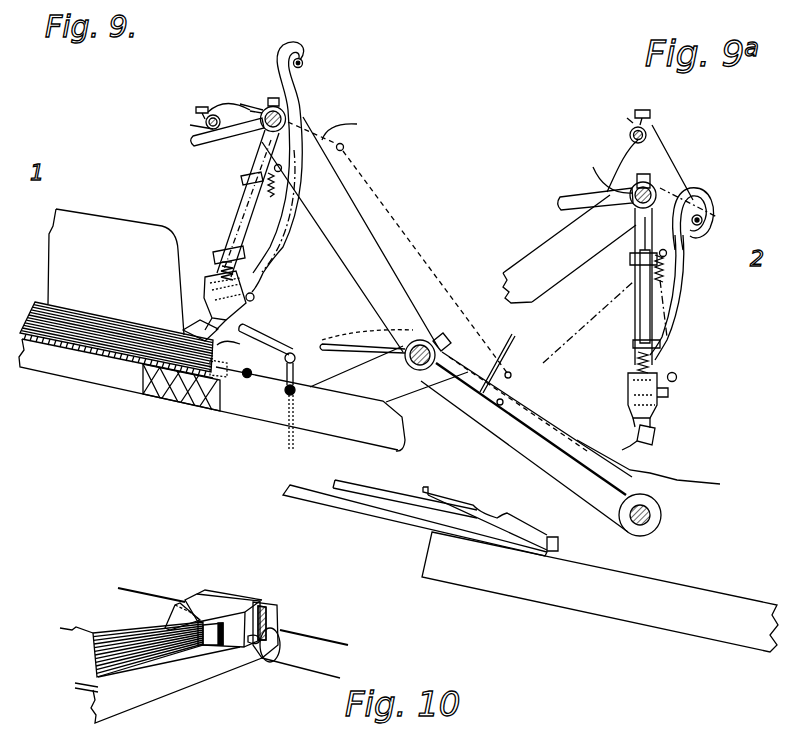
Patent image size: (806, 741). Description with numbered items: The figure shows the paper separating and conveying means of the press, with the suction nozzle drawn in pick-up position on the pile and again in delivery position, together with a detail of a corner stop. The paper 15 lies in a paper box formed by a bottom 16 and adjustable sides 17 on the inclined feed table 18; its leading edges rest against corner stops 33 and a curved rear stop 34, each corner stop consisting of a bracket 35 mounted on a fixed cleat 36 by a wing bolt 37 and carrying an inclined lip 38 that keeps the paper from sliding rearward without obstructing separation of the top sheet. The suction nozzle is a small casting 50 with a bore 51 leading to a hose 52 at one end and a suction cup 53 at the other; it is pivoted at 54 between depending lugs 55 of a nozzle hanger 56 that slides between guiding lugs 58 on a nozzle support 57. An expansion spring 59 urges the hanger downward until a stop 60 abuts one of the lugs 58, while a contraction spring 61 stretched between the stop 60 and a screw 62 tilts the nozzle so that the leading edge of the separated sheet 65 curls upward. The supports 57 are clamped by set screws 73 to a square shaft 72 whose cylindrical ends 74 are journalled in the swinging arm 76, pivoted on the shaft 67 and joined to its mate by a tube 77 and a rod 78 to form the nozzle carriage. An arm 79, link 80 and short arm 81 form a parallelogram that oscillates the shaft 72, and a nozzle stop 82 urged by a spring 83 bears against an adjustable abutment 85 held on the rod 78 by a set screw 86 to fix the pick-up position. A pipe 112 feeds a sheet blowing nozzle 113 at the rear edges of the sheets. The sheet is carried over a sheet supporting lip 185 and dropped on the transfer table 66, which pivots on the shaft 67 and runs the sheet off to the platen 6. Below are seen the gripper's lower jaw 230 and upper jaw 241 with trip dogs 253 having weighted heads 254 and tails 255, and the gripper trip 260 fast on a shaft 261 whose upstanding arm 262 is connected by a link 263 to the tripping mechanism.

In FIG. 9, the table 6 is at (600, 592).
In FIG. 9, the paper 15 is at (107, 323).
In FIG. 10, the paper 15 is at (142, 639).
In FIG. 9, the bottom 16 is at (72, 350).
In FIG. 10, the bottom 16 is at (75, 685).
In FIG. 9, the adjustable sides 17 is at (116, 272).
In FIG. 9, the inclined feed table 18 is at (208, 394).
In FIG. 10, the inclined feed table 18 is at (80, 722).
In FIG. 10, the corner stops 33 is at (222, 610).
In FIG. 9, the curved rear stop 34 is at (173, 392).
In FIG. 10, the bracket 35 is at (203, 593).
In FIG. 10, the fixed cleat 36 is at (277, 607).
In FIG. 10, the wing bolt 37 is at (280, 652).
In FIG. 10, the inclined lip 38 is at (170, 618).
In FIG. 9, the small casting 50 is at (216, 298).
In FIG. 9A, the small casting 50 is at (628, 393).
In FIG. 9, the bore 51 is at (250, 308).
In FIG. 9A, the bore 51 is at (636, 403).
In FIG. 9, the hose 52 is at (277, 252).
In FIG. 9A, the hose 52 is at (683, 300).
In FIG. 9, the suction cup 53 is at (173, 328).
In FIG. 9A, the suction cup 53 is at (640, 440).
In FIG. 9, the pivot 54 is at (206, 324).
In FIG. 9A, the pivot 54 is at (655, 418).
In FIG. 9, the depending lugs 55 is at (222, 262).
In FIG. 9A, the depending lugs 55 is at (660, 400).
In FIG. 9, the nozzle hanger 56 is at (247, 213).
In FIG. 9A, the nozzle hanger 56 is at (645, 318).
In FIG. 9, the nozzle support 57 is at (262, 145).
In FIG. 9A, the nozzle support 57 is at (647, 223).
In FIG. 9, the guiding lugs 58 is at (243, 186).
In FIG. 9A, the guiding lugs 58 is at (660, 345).
In FIG. 9, the expansion spring 59 is at (257, 282).
In FIG. 9A, the expansion spring 59 is at (637, 363).
In FIG. 9, the stop 60 is at (282, 165).
In FIG. 9A, the stop 60 is at (667, 253).
In FIG. 9, the contraction spring 61 is at (293, 210).
In FIG. 9A, the contraction spring 61 is at (665, 273).
In FIG. 9, the screw 62 is at (255, 297).
In FIG. 9A, the screw 62 is at (677, 376).
In FIG. 9A, the separated sheet 65 is at (722, 484).
In FIG. 9, the transfer table 66 is at (543, 447).
In FIG. 9, the shaft 67 is at (422, 371).
In FIG. 9, the shaft 72 is at (285, 112).
In FIG. 9A, the shaft 72 is at (657, 188).
In FIG. 9, the set screws 73 is at (280, 98).
In FIG. 9A, the set screws 73 is at (650, 170).
In FIG. 9, the cylindrical ends 74 is at (260, 123).
In FIG. 9A, the cylindrical ends 74 is at (604, 171).
In FIG. 9, the swinging arm 76 is at (350, 234).
In FIG. 9A, the swinging arm 76 is at (569, 249).
In FIG. 9, the tube 77 is at (302, 58).
In FIG. 9A, the tube 77 is at (703, 222).
In FIG. 9, the rod 78 is at (196, 108).
In FIG. 9A, the rod 78 is at (652, 125).
In FIG. 9, the arm 79 is at (353, 124).
In FIG. 9A, the arm 79 is at (717, 190).
In FIG. 9, the link 80 is at (513, 386).
In FIG. 9A, the link 80 is at (578, 333).
In FIG. 9, the short arm 81 is at (502, 357).
In FIG. 9, the nozzle stop 82 is at (193, 134).
In FIG. 9A, the nozzle stop 82 is at (560, 203).
In FIG. 9, the spring 83 is at (212, 115).
In FIG. 9A, the spring 83 is at (613, 192).
In FIG. 9, the adjustable abutment 85 is at (190, 124).
In FIG. 9A, the adjustable abutment 85 is at (627, 120).
In FIG. 9, the set screw 86 is at (210, 107).
In FIG. 9A, the set screw 86 is at (632, 147).
In FIG. 9, the pipe 112 is at (247, 378).
In FIG. 9, the sheet blowing nozzle 113 is at (212, 380).
In FIG. 9, the sheet supporting lip 185 is at (352, 353).
In FIG. 9, the lower jaw 230 is at (380, 510).
In FIG. 9, the upper gripper jaw 241 is at (360, 484).
In FIG. 9, the trip dogs 253 is at (477, 508).
In FIG. 9, the weighted head 254 is at (551, 535).
In FIG. 9, the tail 255 is at (428, 490).
In FIG. 9, the gripper trip 260 is at (289, 442).
In FIG. 9, the shaft 261 is at (298, 394).
In FIG. 9, the upstanding arm 262 is at (284, 392).
In FIG. 9, the link 263 is at (277, 350).